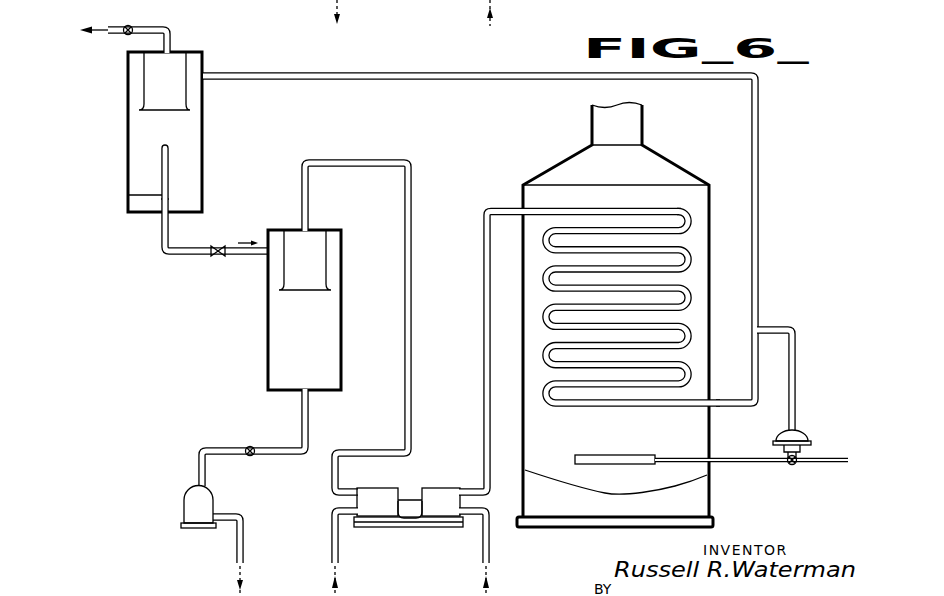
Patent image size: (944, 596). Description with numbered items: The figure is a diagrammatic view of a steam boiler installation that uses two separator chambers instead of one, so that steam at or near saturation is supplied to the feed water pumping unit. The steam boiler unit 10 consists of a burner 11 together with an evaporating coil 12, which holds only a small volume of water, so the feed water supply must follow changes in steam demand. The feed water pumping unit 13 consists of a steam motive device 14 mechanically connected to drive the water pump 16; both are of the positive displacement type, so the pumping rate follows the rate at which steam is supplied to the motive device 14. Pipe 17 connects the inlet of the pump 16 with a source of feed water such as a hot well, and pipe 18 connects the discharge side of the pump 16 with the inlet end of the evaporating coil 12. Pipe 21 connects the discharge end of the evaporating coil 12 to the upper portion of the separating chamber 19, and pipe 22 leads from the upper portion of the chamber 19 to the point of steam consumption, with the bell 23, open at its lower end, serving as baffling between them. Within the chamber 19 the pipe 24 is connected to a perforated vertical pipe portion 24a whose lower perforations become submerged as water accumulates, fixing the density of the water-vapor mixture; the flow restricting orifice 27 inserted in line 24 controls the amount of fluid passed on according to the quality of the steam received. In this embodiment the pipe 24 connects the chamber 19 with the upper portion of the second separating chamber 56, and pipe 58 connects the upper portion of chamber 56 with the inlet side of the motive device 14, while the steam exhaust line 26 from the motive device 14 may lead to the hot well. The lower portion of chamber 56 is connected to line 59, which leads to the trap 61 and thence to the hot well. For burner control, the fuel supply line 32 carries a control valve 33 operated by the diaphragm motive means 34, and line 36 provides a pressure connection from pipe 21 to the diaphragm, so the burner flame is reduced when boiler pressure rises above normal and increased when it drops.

The steam boiler unit 10 is at (571, 156).
The burner 11 is at (652, 455).
The evaporating coil 12 is at (573, 407).
The feed water pumping unit 13 is at (410, 527).
The steam motive device 14 is at (392, 488).
The water pump 16 is at (456, 488).
The pipe 17 is at (484, 550).
The pipe 18 is at (484, 348).
The separating chamber 19 is at (128, 140).
The pipe 21 is at (277, 79).
The pipe 22 is at (153, 29).
The bell 23 is at (144, 93).
The pipe 24 is at (162, 248).
The perforated vertical pipe portion 24a is at (129, 195).
The steam exhaust line 26 is at (333, 549).
The flow restricting orifice 27 is at (217, 262).
The fuel supply line 32 is at (737, 466).
The control valve 33 is at (795, 466).
The diaphragm motive means 34 is at (801, 432).
The line 36 is at (796, 370).
The second separating chamber 56 is at (268, 345).
The pipe 58 is at (389, 164).
The line 59 is at (226, 446).
The trap 61 is at (184, 494).